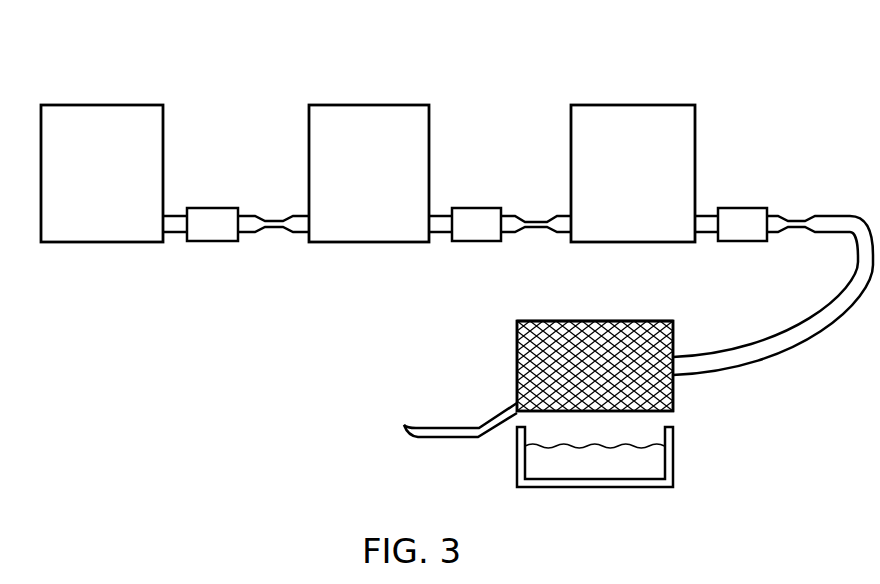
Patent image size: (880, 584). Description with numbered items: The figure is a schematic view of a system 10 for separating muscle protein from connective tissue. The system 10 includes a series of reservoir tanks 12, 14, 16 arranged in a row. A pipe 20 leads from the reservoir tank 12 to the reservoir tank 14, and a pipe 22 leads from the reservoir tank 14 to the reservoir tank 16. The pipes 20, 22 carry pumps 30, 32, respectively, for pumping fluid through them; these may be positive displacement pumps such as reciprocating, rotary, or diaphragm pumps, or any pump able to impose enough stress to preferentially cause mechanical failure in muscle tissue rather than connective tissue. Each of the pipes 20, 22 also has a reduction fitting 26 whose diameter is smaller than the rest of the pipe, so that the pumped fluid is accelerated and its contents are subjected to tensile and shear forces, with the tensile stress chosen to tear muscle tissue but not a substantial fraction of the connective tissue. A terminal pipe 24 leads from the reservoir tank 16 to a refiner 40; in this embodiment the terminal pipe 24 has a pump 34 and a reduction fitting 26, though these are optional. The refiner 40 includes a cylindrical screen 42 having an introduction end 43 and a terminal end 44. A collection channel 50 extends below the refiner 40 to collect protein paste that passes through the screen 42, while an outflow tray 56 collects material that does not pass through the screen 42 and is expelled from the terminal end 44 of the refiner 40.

The system 10 is at (99, 37).
The reservoir tank 12 is at (95, 105).
The reservoir tank 14 is at (362, 105).
The reservoir tank 16 is at (622, 105).
The pipe 20 is at (173, 233).
The pipe 22 is at (437, 233).
The terminal pipe 24 is at (705, 233).
The reduction fitting 26 is at (275, 220).
The pump 30 is at (213, 208).
The pump 32 is at (478, 208).
The pump 34 is at (743, 208).
The refiner 40 is at (675, 412).
The screen 42 is at (675, 345).
The introduction end 43 is at (668, 388).
The terminal end 44 is at (568, 321).
The collection channel 50 is at (673, 455).
The outflow tray 56 is at (445, 428).